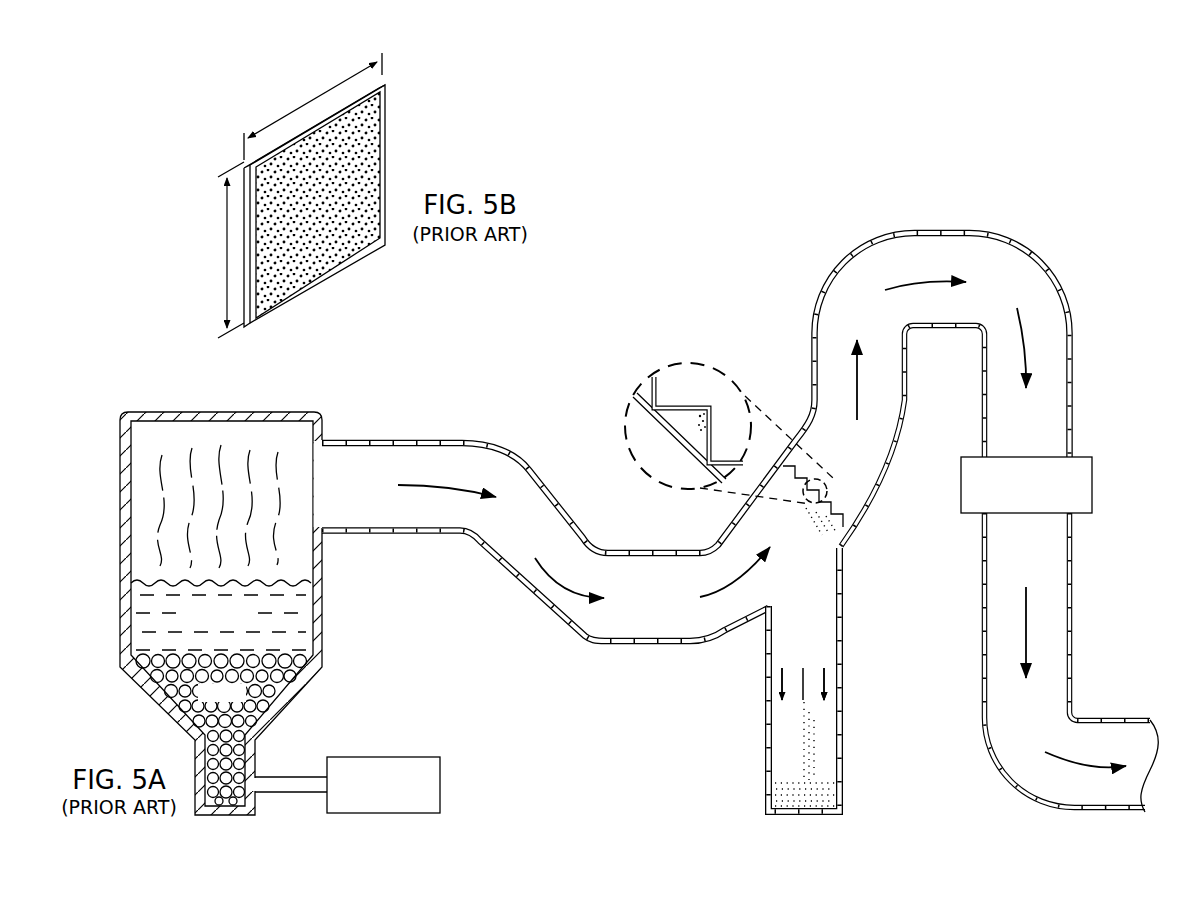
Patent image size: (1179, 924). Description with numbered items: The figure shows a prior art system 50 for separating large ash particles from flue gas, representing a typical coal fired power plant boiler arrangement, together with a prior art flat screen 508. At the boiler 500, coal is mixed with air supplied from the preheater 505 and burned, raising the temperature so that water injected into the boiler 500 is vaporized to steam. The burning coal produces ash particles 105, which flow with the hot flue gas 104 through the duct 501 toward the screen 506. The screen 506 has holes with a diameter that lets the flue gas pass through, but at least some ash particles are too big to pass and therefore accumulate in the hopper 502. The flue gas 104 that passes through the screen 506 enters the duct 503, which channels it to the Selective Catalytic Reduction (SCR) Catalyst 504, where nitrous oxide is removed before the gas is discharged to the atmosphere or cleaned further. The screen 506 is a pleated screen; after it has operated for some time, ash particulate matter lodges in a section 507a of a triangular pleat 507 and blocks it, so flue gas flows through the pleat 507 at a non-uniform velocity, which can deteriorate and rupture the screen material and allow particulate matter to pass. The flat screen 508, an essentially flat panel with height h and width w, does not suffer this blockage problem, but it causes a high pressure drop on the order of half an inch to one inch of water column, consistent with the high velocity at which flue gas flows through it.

In FIG. 5A, the prior art system 50 is at (1018, 196).
In FIG. 5A, the flue gas 104 is at (923, 280).
In FIG. 5A, the ash particles 105 is at (812, 777).
In FIG. 5A, the boiler 500 is at (120, 481).
In FIG. 5A, the duct 501 is at (393, 439).
In FIG. 5A, the hopper 502 is at (842, 797).
In FIG. 5A, the duct 503 is at (822, 292).
In FIG. 5A, the Selective Catalytic Reduction (SCR) Catalyst 504 is at (1028, 515).
In FIG. 5A, the preheater 505 is at (441, 783).
In FIG. 5A, the screen 506 is at (845, 506).
In FIG. 5A, the pleat 507 is at (687, 402).
In FIG. 5A, the section 507a is at (704, 402).
In FIG. 5B, the flat screen 508 is at (390, 132).